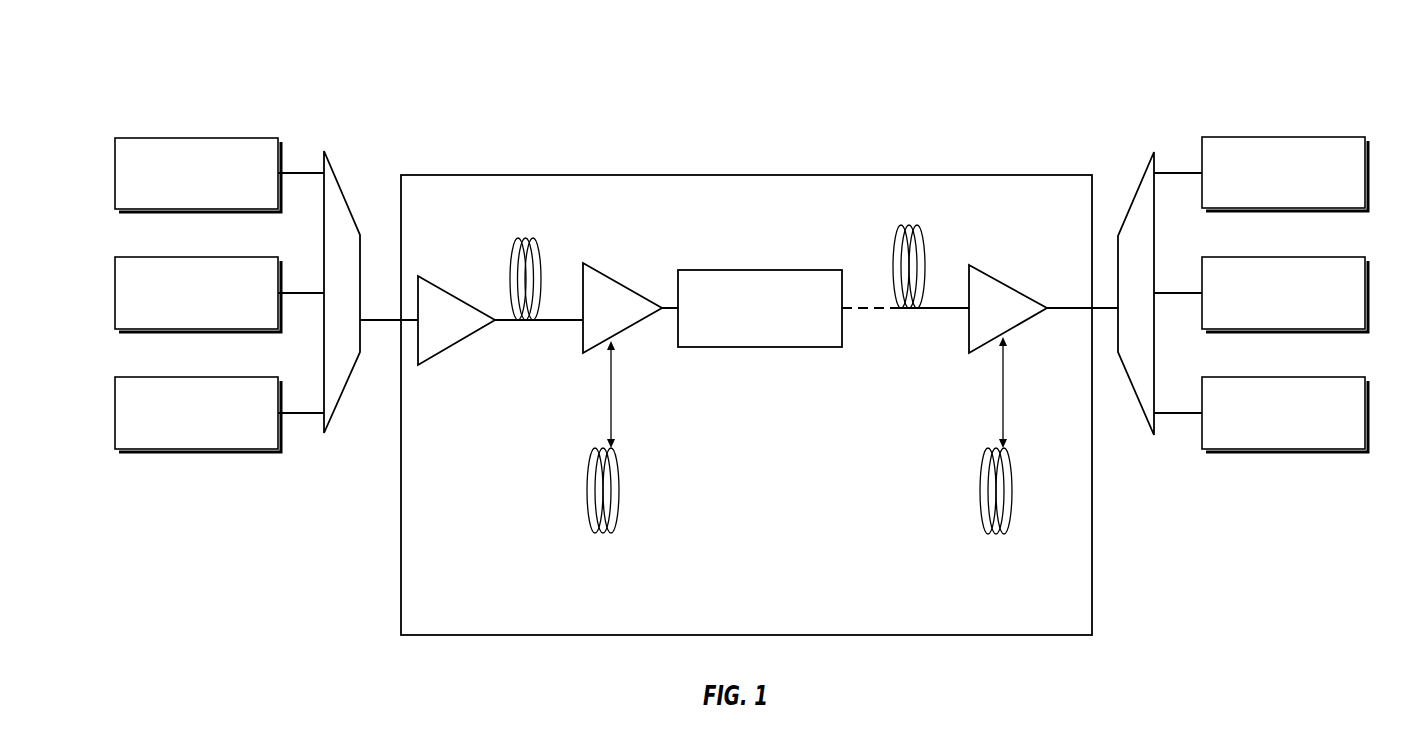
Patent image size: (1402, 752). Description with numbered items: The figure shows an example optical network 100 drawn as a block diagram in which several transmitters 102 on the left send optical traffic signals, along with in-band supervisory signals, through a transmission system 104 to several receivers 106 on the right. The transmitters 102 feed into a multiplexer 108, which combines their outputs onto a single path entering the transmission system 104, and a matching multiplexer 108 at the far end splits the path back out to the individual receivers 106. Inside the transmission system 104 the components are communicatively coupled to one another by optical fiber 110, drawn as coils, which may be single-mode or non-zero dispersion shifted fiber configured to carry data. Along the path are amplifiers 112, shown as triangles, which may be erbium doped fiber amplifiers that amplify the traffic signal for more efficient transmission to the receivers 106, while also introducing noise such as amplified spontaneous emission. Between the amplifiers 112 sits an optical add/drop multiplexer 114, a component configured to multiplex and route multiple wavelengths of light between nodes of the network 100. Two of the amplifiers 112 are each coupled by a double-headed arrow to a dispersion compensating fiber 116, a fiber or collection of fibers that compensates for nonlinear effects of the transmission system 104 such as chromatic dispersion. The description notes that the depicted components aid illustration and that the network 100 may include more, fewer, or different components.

The optical network 100 is at (1046, 68).
The transmitter 102 is at (196, 137).
The transmission system 104 is at (742, 176).
The receiver 106 is at (1283, 137).
The multiplexer (MUX) 108 is at (336, 173).
The optical fiber 110 is at (522, 238).
The amplifier 112 is at (437, 283).
The optical add/drop multiplexer (OADM) 114 is at (759, 270).
The dispersion compensating fiber 116 is at (619, 493).